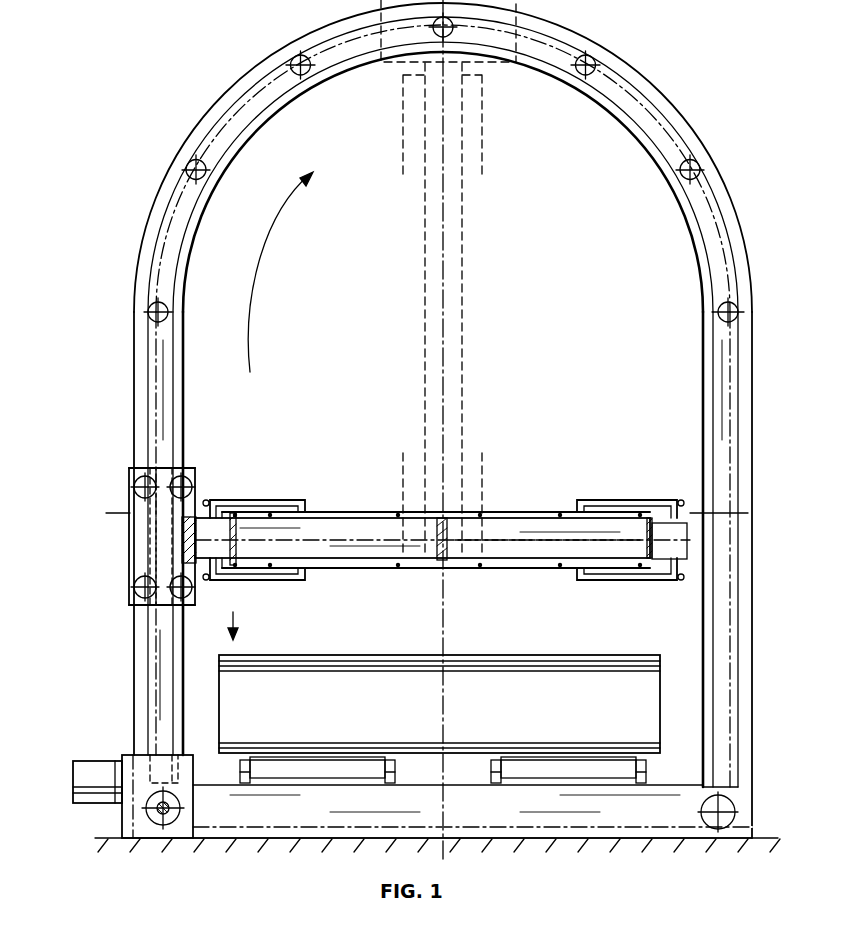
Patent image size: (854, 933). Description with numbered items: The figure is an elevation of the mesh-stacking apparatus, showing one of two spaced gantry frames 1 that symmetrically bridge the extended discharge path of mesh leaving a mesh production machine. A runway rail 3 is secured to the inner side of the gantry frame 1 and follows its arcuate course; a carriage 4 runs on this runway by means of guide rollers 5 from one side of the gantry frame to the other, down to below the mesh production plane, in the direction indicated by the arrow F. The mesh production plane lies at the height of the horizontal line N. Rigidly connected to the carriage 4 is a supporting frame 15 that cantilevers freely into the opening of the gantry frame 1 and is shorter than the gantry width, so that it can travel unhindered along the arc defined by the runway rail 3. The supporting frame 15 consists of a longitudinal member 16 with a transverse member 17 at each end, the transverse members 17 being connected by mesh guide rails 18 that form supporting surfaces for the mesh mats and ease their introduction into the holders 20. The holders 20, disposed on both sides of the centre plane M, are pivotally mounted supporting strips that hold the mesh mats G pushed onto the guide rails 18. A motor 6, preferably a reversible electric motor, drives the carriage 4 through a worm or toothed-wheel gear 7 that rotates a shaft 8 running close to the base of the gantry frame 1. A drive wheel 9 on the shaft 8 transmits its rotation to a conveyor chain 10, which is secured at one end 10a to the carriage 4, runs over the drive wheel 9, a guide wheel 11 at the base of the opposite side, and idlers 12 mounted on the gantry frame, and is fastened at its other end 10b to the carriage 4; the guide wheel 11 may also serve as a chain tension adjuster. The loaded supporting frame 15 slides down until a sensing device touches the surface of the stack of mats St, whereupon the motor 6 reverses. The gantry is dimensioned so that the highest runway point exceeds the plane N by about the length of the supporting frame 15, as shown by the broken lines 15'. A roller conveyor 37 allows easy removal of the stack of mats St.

The gantry frame 1 is at (752, 700).
The runway rail 3 is at (160, 386).
The carriage 4 is at (130, 548).
The guide rollers 5 is at (184, 480).
The motor 6 is at (88, 772).
The worm gear or toothed-wheel gear 7 is at (130, 818).
The shaft 8 is at (160, 814).
The drive wheel 9 is at (176, 812).
The conveyor chain 10 is at (668, 116).
The one end of conveyor chain 10a is at (146, 604).
The other end of conveyor chain 10b is at (146, 470).
The guide wheel 11 is at (712, 818).
The idlers 12 is at (740, 300).
The supporting frame 15 is at (442, 511).
The broken lines indicating supporting frame position 15' is at (446, 277).
The longitudinal member 16 is at (197, 514).
The transverse member 17 is at (345, 556).
The mesh guide rails 18 is at (255, 526).
The holders 20 is at (262, 500).
The roller conveyor 37 is at (342, 775).
The arrow indicating carriage travel F is at (280, 272).
The mesh mats G is at (510, 512).
The centre plane M is at (530, 542).
The horizontal line indicating mesh production plane N is at (100, 513).
The stack of mats St is at (573, 672).